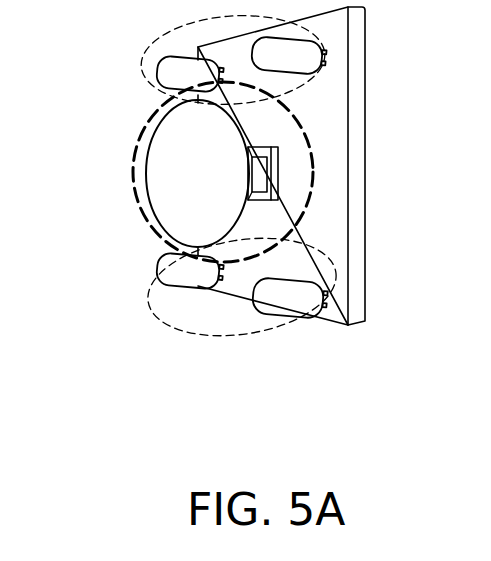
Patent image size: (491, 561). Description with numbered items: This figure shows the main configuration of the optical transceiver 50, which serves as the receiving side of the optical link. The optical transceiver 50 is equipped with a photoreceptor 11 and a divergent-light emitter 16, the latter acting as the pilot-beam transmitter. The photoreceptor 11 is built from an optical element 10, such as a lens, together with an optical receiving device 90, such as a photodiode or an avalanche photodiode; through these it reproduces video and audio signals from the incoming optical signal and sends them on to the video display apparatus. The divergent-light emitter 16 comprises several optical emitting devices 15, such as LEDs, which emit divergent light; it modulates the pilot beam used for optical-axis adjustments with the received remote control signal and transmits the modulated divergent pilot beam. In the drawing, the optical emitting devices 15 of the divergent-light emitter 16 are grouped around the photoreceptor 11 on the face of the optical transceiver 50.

The optical transceiver 50 is at (312, 340).
The divergent-light emitter 16 is at (292, 92).
The photoreceptor 11 is at (133, 168).
The optical element 10 is at (150, 216).
The optical receiving device 90 is at (279, 175).
The optical emitting device 15 is at (157, 66).